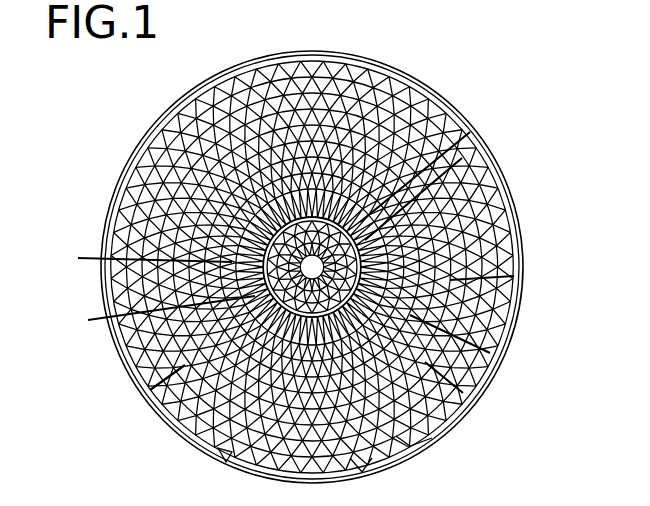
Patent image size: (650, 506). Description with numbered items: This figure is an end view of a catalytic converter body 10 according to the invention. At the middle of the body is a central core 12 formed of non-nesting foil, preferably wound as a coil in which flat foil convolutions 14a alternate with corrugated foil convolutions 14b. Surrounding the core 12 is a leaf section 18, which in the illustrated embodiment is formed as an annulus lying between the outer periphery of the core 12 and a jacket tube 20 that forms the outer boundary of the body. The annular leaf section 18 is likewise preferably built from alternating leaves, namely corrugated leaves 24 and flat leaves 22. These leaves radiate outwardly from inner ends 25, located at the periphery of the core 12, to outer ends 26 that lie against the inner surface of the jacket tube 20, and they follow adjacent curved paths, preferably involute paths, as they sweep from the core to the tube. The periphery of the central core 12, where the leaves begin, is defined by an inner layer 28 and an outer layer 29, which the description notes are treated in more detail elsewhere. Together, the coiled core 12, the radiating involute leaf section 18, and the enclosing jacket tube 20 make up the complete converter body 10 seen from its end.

The catalytic converter body 10 is at (130, 137).
The central core 12 is at (155, 315).
The flat foil convolution 14a is at (463, 393).
The corrugated foil convolution 14b is at (490, 353).
The leaf section 18 is at (514, 276).
The jacket tube 20 is at (518, 207).
The flat leaf 22 is at (432, 440).
The corrugated leaf 24 is at (381, 462).
The inner ends 25 is at (462, 158).
The outer ends 26 is at (243, 457).
The inner layer 28 is at (139, 261).
The outer layer 29 is at (150, 390).